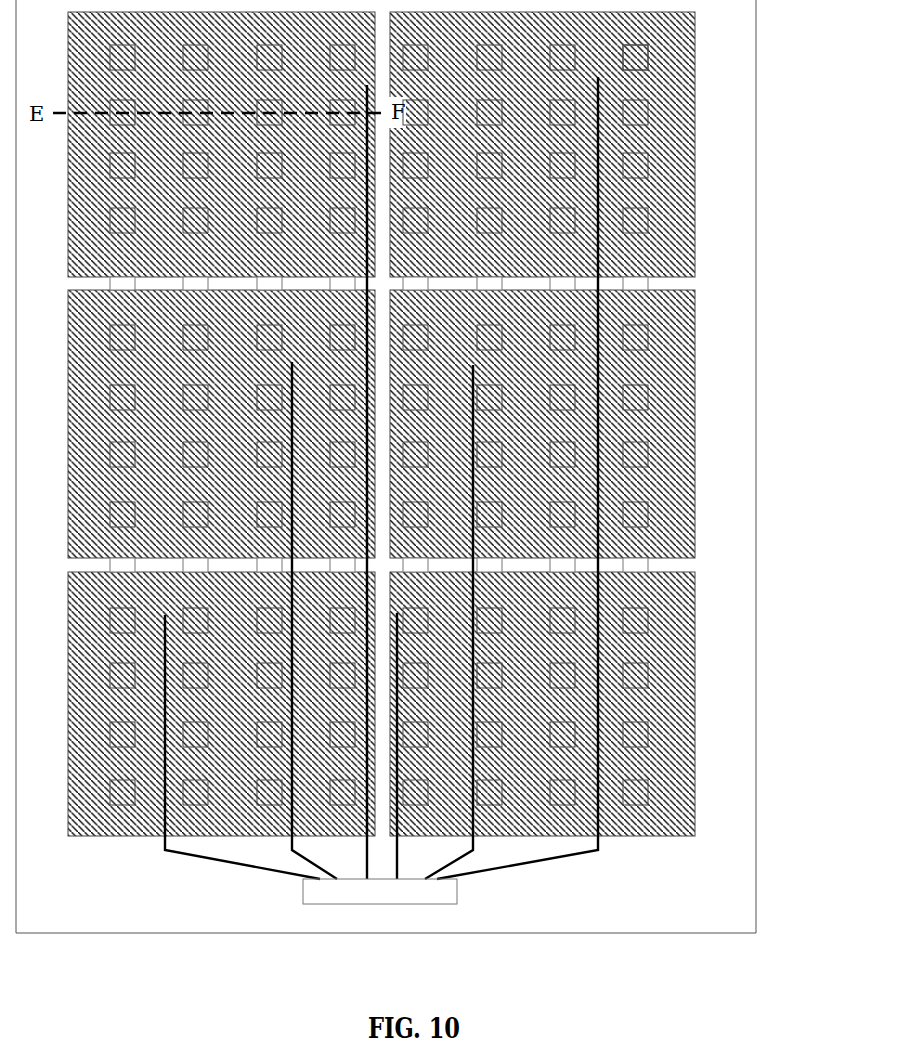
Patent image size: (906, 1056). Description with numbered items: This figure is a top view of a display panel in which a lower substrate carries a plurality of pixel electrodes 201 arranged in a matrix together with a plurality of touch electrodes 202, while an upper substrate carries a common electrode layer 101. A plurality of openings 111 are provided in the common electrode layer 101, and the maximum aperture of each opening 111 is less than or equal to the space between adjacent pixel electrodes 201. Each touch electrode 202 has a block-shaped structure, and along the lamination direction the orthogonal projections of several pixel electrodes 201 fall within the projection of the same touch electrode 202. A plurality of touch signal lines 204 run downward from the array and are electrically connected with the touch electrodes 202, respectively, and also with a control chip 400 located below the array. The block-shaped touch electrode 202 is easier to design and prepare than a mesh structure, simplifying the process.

The opening 111 is at (645, 42).
The touch electrode 202 is at (686, 155).
The pixel electrode 201 is at (677, 228).
The common electrode layer 101 is at (693, 278).
The touch signal line 204 is at (203, 860).
The control chip 400 is at (435, 895).